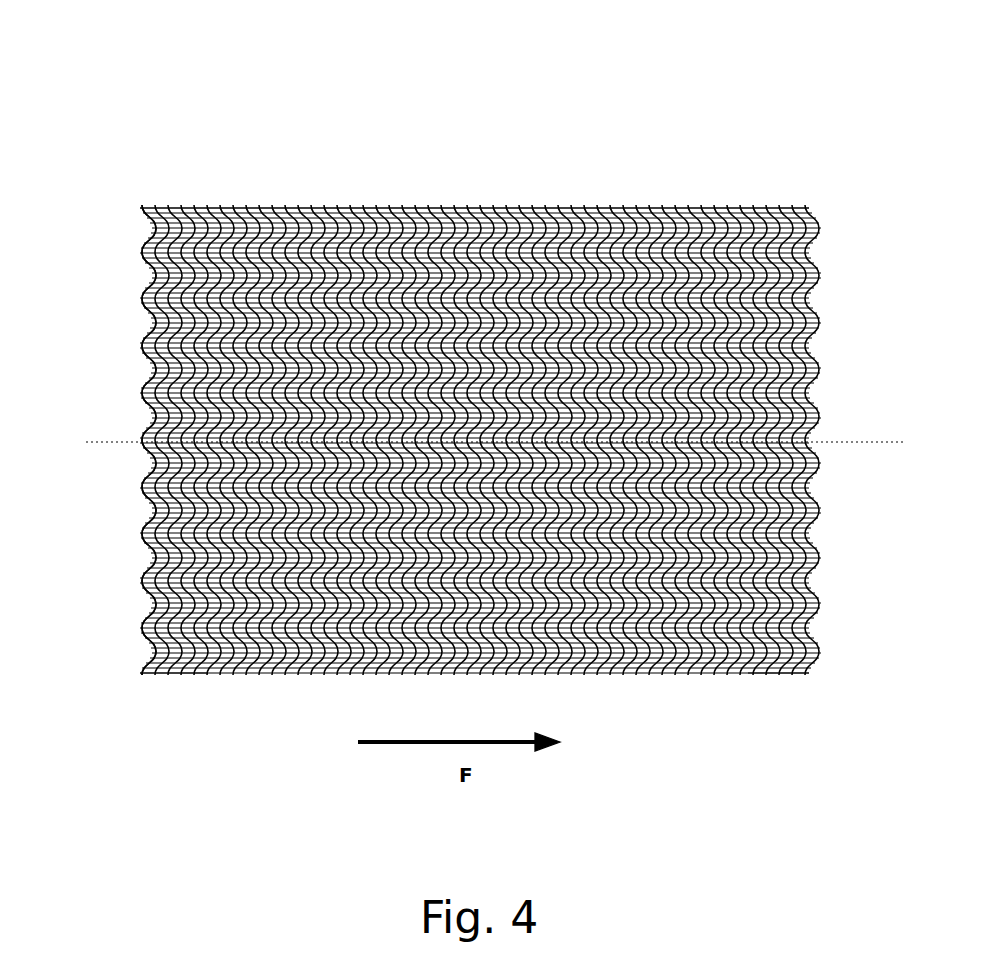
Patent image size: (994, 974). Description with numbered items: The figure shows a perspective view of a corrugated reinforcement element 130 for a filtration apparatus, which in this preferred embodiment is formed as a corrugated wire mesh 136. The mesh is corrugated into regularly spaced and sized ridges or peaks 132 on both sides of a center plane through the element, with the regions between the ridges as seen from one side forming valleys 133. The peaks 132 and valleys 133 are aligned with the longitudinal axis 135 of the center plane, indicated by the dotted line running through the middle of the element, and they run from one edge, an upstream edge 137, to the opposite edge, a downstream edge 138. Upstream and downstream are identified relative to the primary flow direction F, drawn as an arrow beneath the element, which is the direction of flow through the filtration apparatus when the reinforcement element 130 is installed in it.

The corrugated reinforcement element 130 is at (221, 90).
The ridges or peaks 132 is at (137, 251).
The valleys 133 is at (797, 268).
The longitudinal axis 135 is at (866, 436).
The corrugated wire mesh 136 is at (457, 197).
The upstream edge 137 is at (142, 686).
The downstream edge 138 is at (803, 684).